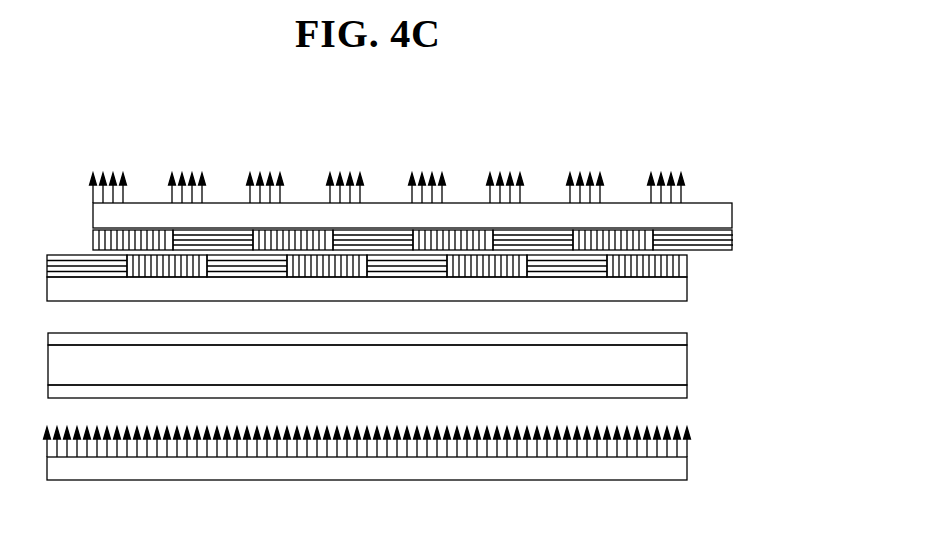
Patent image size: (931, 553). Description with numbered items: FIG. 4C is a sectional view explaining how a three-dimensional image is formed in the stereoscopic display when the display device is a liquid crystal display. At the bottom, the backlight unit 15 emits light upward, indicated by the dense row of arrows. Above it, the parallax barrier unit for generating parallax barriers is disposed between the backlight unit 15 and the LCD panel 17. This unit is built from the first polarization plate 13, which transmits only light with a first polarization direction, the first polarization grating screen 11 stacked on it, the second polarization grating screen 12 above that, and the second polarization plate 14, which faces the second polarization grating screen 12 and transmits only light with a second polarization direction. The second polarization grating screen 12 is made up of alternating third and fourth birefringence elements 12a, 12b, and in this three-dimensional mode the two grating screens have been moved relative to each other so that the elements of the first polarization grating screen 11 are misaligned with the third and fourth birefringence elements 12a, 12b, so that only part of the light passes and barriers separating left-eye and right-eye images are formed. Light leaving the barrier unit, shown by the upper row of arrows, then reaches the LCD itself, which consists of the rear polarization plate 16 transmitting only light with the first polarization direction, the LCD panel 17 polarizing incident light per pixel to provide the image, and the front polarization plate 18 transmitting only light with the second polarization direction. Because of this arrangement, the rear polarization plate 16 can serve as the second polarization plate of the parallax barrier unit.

The first polarization grating screen 11 is at (688, 267).
The second polarization grating screen 12 is at (453, 186).
The third birefringence element 12a is at (146, 240).
The fourth birefringence element 12b is at (224, 240).
The first polarization plate 13 is at (680, 287).
The second polarization plate 14 is at (725, 215).
The backlight unit 15 is at (678, 465).
The rear polarization plate 16 is at (678, 388).
The LCD panel 17 is at (678, 362).
The front polarization plate 18 is at (678, 338).